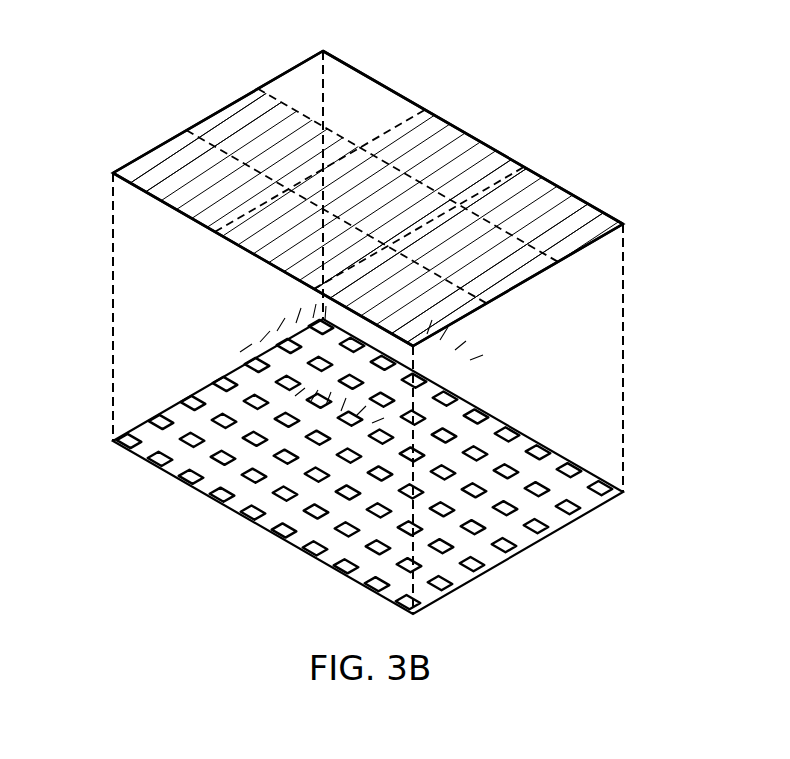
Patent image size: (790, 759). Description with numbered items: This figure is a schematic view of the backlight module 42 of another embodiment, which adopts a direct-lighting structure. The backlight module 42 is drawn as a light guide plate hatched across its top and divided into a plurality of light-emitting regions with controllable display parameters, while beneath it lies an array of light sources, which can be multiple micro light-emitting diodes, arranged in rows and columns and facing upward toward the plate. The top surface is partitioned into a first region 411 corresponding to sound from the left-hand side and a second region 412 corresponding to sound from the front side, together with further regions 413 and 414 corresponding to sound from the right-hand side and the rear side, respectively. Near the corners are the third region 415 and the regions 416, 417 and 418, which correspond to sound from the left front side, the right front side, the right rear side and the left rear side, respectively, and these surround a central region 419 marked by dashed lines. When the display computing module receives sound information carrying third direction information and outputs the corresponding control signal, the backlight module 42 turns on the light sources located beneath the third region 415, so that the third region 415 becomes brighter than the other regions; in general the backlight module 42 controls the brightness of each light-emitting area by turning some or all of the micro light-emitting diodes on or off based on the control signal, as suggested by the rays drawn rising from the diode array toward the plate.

The first region 411 is at (250, 115).
The second region 412 is at (468, 145).
The region 413 is at (493, 265).
The region 414 is at (267, 245).
The third region 415 is at (310, 88).
The region 416 is at (563, 202).
The region 417 is at (433, 305).
The region 418 is at (182, 168).
The central region 419 is at (387, 202).
The backlight module 42 is at (287, 338).